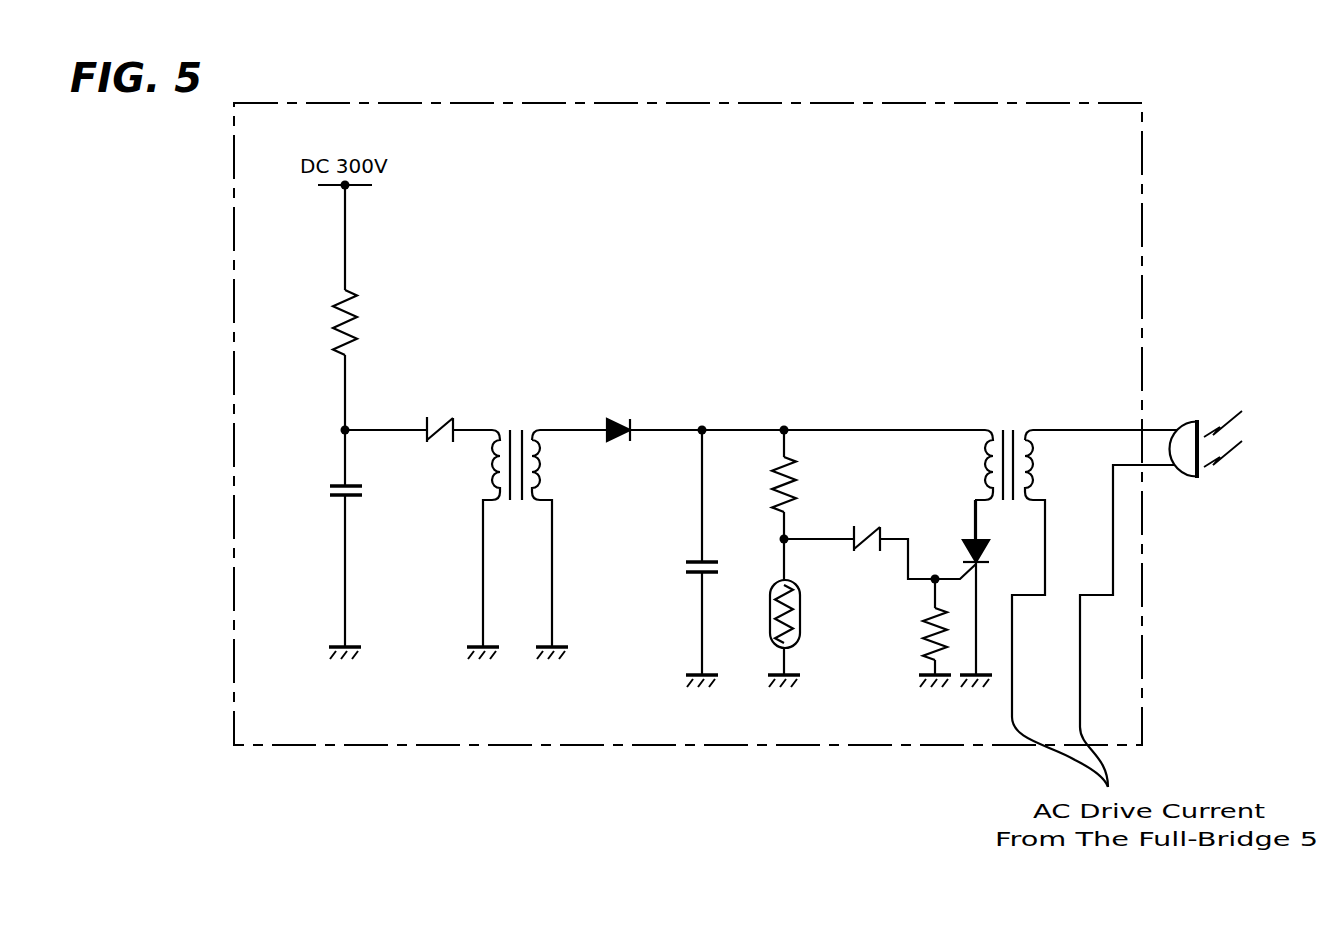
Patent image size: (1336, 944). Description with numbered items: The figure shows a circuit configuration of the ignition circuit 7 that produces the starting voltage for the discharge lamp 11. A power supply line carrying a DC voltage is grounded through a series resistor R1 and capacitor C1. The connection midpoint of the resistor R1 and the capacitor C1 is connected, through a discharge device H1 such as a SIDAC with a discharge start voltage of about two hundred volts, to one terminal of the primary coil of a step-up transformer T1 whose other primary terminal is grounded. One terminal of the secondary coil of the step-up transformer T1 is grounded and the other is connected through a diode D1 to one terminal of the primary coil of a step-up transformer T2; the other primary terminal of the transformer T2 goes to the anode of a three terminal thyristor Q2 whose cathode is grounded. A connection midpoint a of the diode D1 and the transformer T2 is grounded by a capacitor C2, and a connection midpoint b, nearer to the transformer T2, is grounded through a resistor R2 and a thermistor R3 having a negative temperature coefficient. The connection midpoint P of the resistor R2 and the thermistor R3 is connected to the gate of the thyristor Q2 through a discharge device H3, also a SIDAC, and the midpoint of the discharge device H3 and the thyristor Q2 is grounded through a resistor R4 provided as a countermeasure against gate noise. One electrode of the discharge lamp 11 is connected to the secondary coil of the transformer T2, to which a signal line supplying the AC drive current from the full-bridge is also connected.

The ignition circuit 7 is at (1143, 582).
The discharge lamp 11 is at (1192, 421).
The resistor R1 is at (362, 322).
The capacitor C1 is at (330, 491).
The discharge device H1 is at (441, 414).
The step-up transformer T1 is at (530, 522).
The diode D1 is at (616, 417).
The capacitor C2 is at (686, 568).
The resistor R2 is at (767, 484).
The thermistor R3 is at (770, 614).
The discharge device H3 is at (867, 524).
The resistor R4 is at (919, 624).
The three terminal thyristor Q2 is at (992, 587).
The step-up transformer T2 is at (1076, 592).
The connection midpoint a is at (702, 417).
The connection midpoint b is at (783, 417).
The connection midpoint P is at (797, 524).